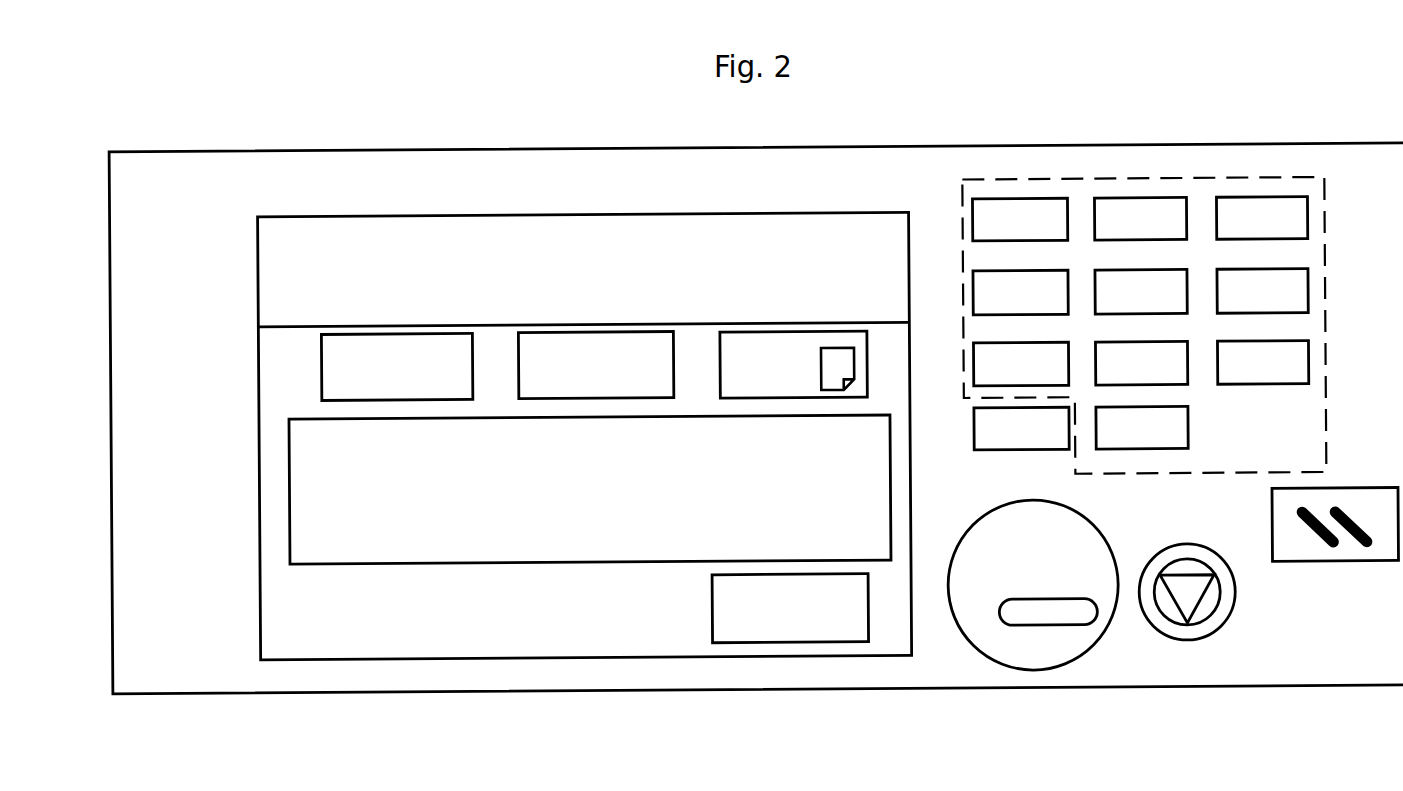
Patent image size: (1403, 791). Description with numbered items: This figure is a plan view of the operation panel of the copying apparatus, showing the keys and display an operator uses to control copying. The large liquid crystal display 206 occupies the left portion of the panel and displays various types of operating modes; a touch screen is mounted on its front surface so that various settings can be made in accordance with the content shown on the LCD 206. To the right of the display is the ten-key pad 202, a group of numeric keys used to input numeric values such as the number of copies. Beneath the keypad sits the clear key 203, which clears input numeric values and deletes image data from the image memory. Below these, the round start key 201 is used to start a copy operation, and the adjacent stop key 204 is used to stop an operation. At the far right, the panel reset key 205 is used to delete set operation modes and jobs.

The start key 201 is at (1036, 672).
The ten-key pad 202 is at (1146, 181).
The clear key 203 is at (972, 450).
The stop key 204 is at (1181, 643).
The panel reset key 205 is at (1343, 566).
The liquid crystal display (LCD) 206 is at (472, 213).